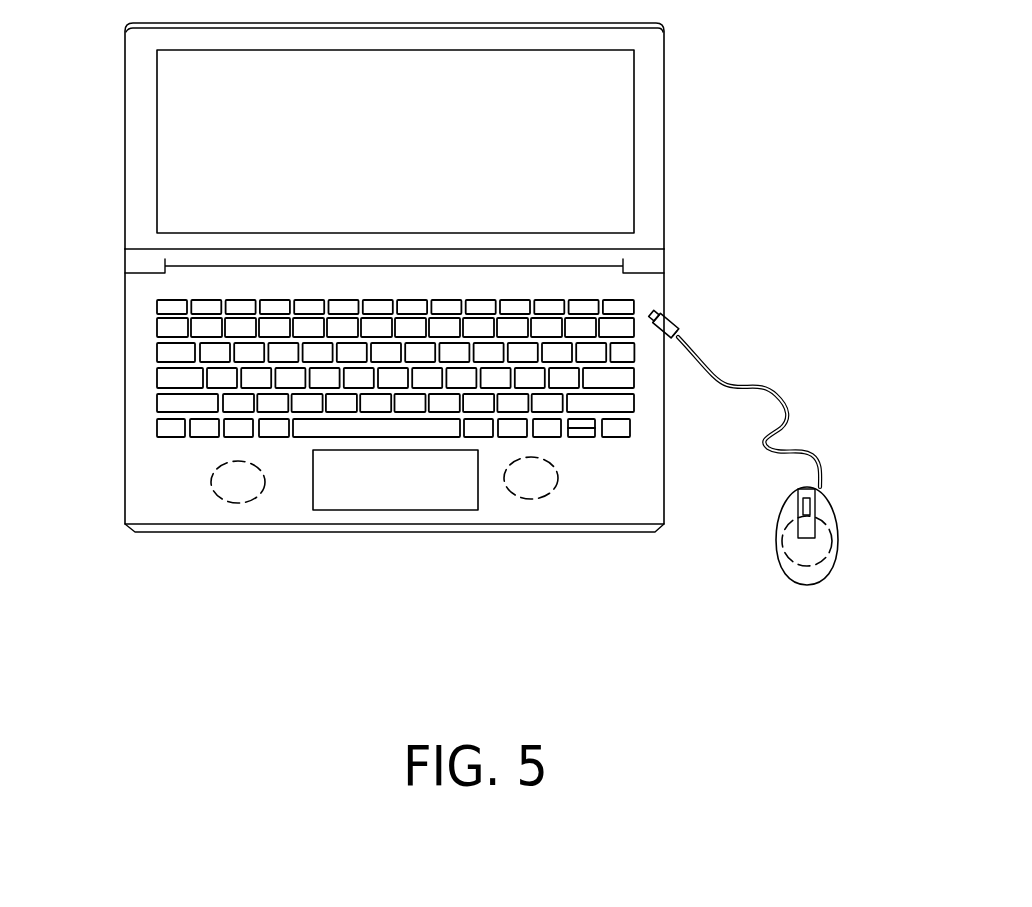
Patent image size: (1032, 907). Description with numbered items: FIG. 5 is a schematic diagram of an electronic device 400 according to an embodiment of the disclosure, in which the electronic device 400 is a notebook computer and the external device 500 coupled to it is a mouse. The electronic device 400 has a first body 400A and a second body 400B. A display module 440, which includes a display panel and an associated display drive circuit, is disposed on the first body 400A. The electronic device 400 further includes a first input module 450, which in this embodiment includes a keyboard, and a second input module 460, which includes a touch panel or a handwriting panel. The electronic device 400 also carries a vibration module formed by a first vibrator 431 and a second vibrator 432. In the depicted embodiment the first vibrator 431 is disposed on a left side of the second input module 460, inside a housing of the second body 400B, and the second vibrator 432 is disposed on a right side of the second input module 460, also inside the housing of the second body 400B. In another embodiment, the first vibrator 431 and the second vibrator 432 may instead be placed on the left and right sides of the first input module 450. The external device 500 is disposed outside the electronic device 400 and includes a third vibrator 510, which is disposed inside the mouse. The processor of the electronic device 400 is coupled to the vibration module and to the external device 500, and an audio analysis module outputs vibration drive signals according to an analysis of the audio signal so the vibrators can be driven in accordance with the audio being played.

The electronic device 400 is at (798, 674).
The first body 400A is at (387, 136).
The second body 400B is at (387, 437).
The display module 440 is at (186, 122).
The first input module 450 is at (173, 355).
The second input module 460 is at (400, 512).
The first vibrator 431 is at (233, 507).
The second vibrator 432 is at (528, 507).
The external device 500 is at (782, 457).
The third vibrator 510 is at (817, 565).